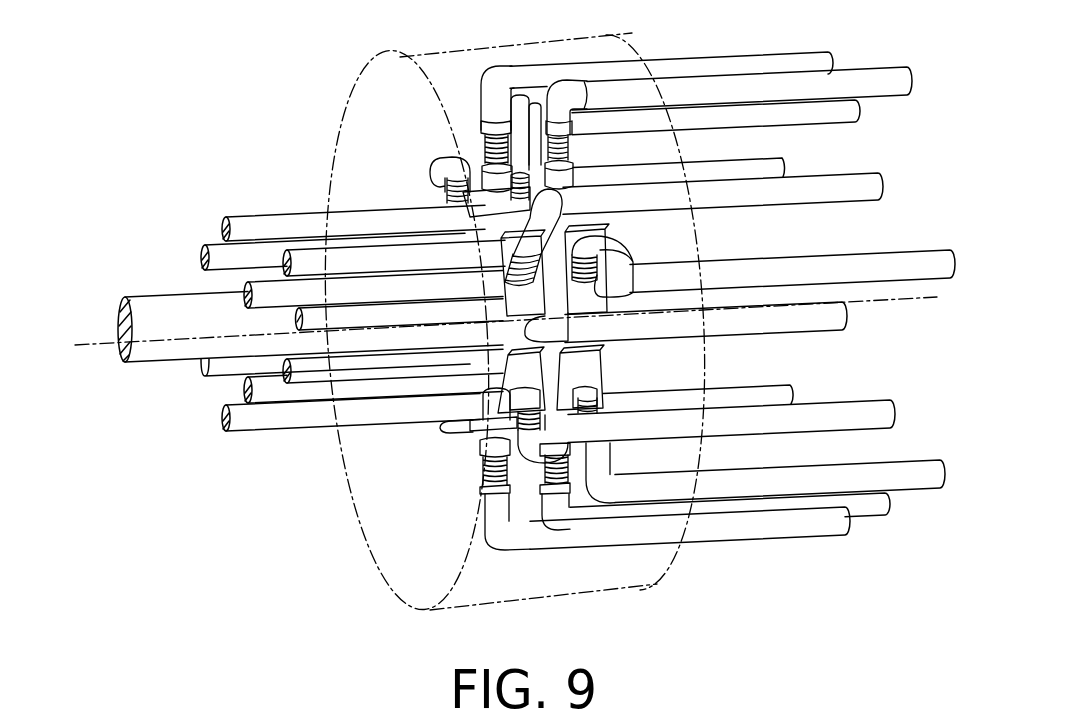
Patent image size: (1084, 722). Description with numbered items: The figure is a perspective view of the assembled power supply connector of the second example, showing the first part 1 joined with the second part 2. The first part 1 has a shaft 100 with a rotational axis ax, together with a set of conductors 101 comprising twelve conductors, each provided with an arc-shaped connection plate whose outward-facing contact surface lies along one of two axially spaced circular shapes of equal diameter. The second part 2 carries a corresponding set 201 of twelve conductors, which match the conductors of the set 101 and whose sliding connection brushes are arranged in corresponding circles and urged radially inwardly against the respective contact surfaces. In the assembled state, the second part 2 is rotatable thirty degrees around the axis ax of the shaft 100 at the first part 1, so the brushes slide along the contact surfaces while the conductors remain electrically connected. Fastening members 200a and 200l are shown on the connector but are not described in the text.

The first part 1 is at (501, 346).
The second part 2 is at (707, 557).
The shaft 100 is at (155, 297).
The set of conductors 101 is at (300, 372).
The upper fastening clamp 200l is at (478, 160).
The lower fastening clamp 200a is at (467, 447).
The set of conductors 201 is at (823, 563).
The rotational axis ax is at (80, 345).